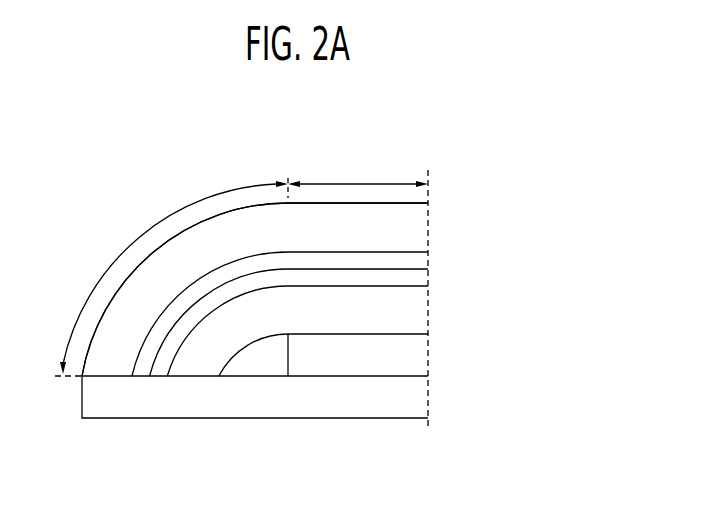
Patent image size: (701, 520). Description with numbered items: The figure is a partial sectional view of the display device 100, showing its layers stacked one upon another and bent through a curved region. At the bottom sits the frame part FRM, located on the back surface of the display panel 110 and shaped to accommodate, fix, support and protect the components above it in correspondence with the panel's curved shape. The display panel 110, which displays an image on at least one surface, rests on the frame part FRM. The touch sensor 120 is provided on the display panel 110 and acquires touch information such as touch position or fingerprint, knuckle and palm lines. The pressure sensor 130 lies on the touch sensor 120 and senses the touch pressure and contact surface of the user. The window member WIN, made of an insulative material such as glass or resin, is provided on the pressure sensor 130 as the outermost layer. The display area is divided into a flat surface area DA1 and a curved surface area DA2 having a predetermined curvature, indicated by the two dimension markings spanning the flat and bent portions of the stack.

The display device 100 is at (136, 155).
The window member WIN is at (423, 229).
The pressure sensor 130 is at (422, 259).
The touch sensor 120 is at (422, 279).
The display panel 110 is at (422, 309).
The frame part FRM is at (423, 399).
The flat surface area DA1 is at (358, 172).
The curved surface area DA2 is at (174, 277).